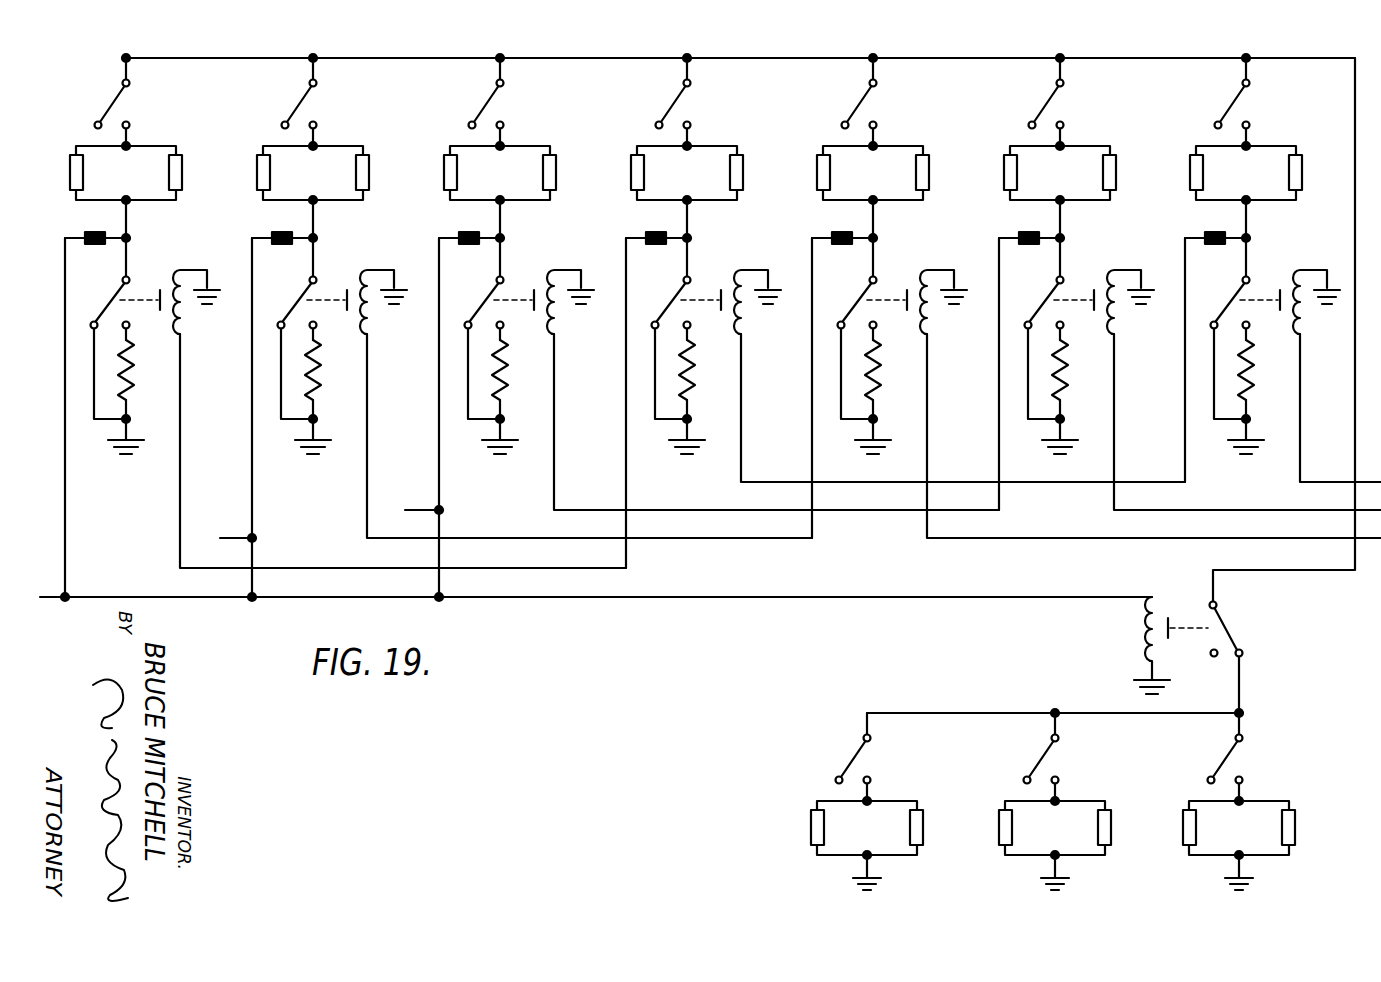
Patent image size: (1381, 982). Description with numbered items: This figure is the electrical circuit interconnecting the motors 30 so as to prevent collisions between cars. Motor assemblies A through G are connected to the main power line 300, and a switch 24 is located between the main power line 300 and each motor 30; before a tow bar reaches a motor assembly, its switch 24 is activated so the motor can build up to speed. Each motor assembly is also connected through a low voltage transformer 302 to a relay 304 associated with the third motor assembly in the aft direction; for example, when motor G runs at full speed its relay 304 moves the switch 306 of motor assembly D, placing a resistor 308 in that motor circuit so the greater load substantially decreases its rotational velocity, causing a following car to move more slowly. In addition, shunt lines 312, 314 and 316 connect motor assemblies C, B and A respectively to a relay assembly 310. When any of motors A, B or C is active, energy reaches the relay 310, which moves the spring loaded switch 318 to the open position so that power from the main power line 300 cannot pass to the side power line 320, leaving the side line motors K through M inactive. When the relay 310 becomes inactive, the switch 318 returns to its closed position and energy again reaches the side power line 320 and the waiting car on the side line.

The switch 24 is at (697, 429).
The motor assembly 30 is at (701, 500).
The main power line 300 is at (638, 57).
The low voltage transformer 302 is at (688, 222).
The relay 304 is at (769, 402).
The switch 306 is at (724, 300).
The resistor 308 is at (725, 392).
The relay assembly 310 is at (1142, 634).
The shunt line 312 is at (441, 492).
The shunt line 314 is at (253, 506).
The shunt line 316 is at (66, 562).
The spring loaded switch 318 is at (1230, 636).
The side power line 320 is at (977, 712).